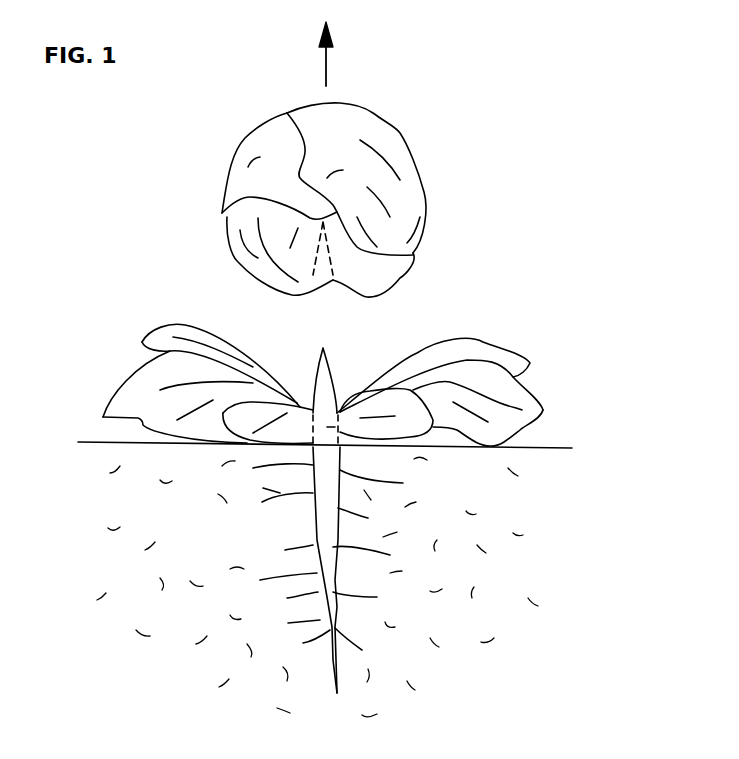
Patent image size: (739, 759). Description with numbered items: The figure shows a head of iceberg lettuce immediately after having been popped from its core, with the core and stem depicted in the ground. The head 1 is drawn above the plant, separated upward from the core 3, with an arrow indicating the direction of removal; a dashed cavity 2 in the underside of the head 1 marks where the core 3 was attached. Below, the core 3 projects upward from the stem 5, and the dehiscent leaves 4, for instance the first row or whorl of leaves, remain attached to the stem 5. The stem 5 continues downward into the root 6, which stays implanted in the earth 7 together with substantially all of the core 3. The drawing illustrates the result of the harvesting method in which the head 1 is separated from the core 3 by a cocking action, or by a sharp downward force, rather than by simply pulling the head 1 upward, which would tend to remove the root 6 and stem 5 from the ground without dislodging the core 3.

The head 1 is at (410, 192).
The seed germination direction arrow 2 is at (327, 282).
The core 3 is at (323, 382).
The dehiscent leaves 4 is at (522, 410).
The stem 5 is at (345, 429).
The root 6 is at (313, 560).
The soil / ground 7 is at (103, 448).